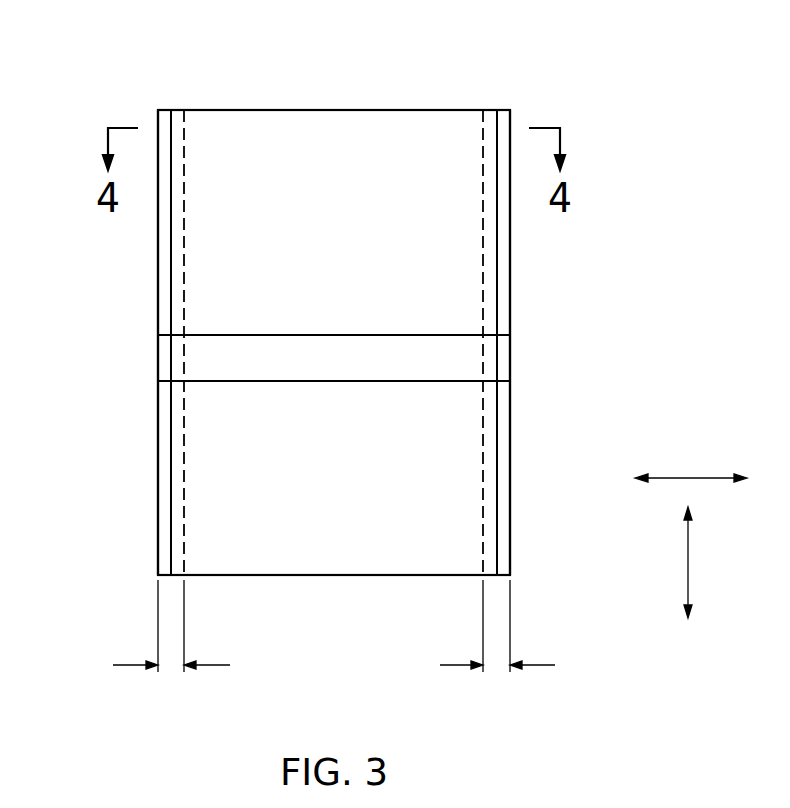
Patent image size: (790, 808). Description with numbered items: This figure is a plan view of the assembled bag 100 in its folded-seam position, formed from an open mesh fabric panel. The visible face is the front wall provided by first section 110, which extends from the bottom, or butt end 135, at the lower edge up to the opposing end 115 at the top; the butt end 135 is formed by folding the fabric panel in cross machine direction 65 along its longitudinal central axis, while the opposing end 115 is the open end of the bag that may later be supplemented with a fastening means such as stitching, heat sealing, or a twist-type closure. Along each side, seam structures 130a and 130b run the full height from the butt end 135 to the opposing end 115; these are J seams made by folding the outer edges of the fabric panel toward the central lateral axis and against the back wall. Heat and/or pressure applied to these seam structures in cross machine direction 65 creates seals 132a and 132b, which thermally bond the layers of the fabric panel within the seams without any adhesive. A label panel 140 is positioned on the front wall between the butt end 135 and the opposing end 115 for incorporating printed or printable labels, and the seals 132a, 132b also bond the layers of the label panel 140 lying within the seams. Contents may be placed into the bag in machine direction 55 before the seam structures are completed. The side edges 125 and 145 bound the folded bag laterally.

The bag 100 is at (131, 91).
The first section 110 is at (350, 238).
The opposing end 115 is at (330, 110).
The first side edge 125 is at (158, 356).
The second side edge 145 is at (510, 356).
The seal 132a is at (171, 441).
The seal 132b is at (497, 441).
The seam structure 130a is at (130, 665).
The seam structure 130b is at (537, 665).
The butt end 135 is at (350, 575).
The label panel 140 is at (353, 368).
The machine direction 55 is at (689, 478).
The cross machine direction 65 is at (688, 566).